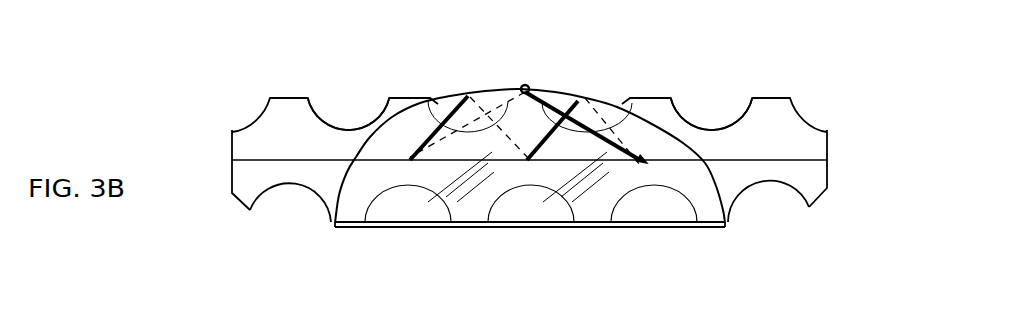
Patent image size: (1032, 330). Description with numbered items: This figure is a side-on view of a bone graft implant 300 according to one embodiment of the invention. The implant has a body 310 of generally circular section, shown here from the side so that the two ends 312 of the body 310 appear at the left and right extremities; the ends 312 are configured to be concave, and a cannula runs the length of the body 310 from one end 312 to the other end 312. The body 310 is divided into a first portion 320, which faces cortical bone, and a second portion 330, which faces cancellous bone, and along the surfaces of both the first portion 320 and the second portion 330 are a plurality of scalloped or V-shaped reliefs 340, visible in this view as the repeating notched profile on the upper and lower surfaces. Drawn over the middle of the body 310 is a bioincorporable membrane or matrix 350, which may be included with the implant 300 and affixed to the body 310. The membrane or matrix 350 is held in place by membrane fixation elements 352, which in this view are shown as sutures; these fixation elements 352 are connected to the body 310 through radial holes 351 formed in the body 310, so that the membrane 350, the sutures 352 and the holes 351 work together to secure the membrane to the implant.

The bone graft implant 300 is at (858, 55).
The body 310 is at (252, 128).
The end 312 is at (230, 143).
The first portion 320 is at (768, 99).
The second portion 330 is at (232, 182).
The scalloped or V-shaped reliefs 340 is at (313, 107).
The bioincorporable membrane or matrix 350 is at (337, 228).
The radial holes 351 is at (387, 230).
The membrane fixation elements 352 is at (545, 102).